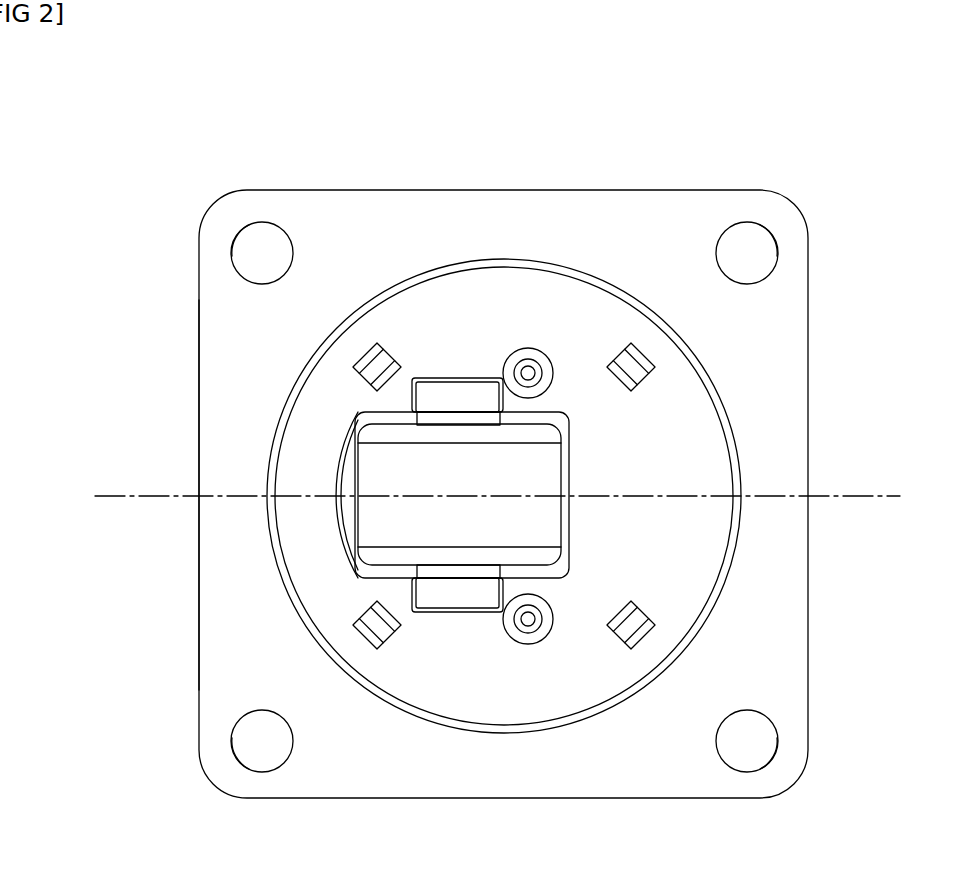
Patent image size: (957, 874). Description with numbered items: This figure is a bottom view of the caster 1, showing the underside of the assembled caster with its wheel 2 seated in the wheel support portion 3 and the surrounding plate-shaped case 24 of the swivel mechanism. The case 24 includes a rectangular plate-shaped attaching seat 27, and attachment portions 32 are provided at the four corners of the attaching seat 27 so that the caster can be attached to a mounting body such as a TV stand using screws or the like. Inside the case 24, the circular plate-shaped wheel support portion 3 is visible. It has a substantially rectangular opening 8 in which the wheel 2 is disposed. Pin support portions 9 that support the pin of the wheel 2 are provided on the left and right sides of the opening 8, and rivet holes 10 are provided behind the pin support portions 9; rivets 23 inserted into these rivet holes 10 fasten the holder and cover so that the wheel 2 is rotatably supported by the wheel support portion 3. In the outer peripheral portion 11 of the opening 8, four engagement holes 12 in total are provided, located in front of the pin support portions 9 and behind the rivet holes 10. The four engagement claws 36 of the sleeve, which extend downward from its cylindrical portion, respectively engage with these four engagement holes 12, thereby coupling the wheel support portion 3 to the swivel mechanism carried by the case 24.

The caster 1 is at (757, 98).
The wheel 2 is at (350, 517).
The wheel support portion 3 is at (742, 442).
The opening 8 is at (569, 560).
The pin support portions 9 is at (447, 378).
The rivet holes 10 is at (531, 352).
The outer peripheral portion 11 is at (713, 485).
The engagement holes 12 is at (372, 380).
The rivets 23 is at (523, 358).
The case 24 is at (358, 190).
The attaching seat 27 is at (198, 517).
The attachment portions 32 is at (249, 224).
The engagement claws 36 is at (362, 354).